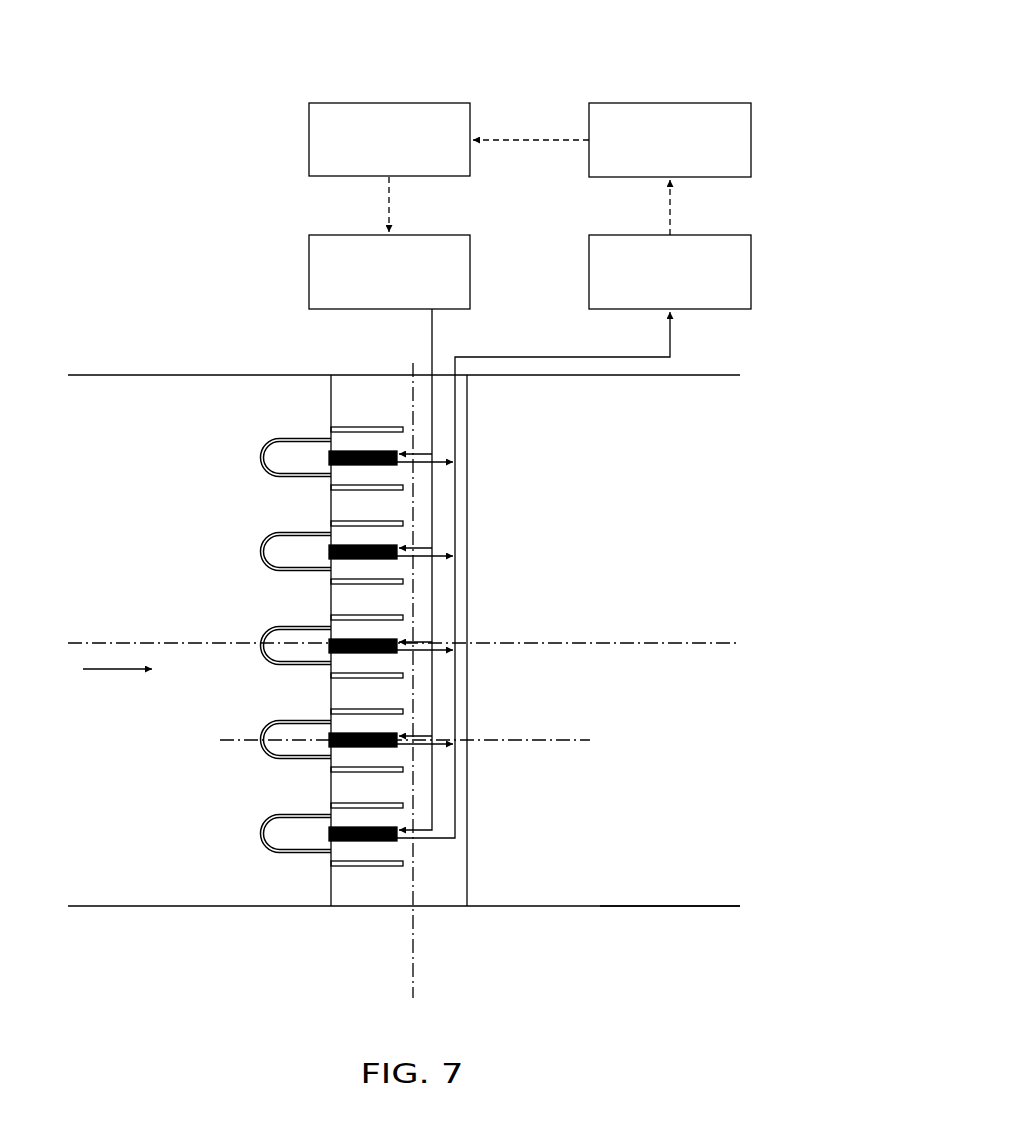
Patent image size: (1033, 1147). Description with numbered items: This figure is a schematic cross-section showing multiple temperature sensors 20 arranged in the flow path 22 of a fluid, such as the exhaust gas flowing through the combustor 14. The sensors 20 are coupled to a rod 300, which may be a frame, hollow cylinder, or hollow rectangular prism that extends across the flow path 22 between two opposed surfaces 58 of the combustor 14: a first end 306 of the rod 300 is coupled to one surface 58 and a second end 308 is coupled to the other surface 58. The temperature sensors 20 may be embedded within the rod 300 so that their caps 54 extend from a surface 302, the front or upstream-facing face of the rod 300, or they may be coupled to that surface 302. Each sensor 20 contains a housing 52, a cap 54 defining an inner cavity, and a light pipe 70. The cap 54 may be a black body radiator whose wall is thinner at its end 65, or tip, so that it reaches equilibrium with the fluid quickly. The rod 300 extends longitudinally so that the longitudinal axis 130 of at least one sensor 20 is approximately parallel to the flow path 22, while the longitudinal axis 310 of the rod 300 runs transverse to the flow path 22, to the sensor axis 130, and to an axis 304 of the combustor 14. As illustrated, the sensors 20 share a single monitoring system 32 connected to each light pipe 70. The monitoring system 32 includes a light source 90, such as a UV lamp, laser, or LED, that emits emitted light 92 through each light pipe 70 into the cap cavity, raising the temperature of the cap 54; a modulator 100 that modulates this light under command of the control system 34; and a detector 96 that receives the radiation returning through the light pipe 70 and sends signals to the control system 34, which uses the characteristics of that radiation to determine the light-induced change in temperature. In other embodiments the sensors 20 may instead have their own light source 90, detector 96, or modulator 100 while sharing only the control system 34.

The combustor 14 is at (734, 930).
The temperature sensor 20 is at (267, 680).
The flow path 22 is at (117, 670).
The monitoring system 32 is at (752, 40).
The control system 34 is at (751, 139).
The housing 52 is at (350, 427).
The cap 54 is at (300, 437).
The surface 58 is at (660, 377).
The end 65 is at (248, 826).
The light pipe 70 is at (367, 446).
The light source 90 is at (309, 272).
The emitted light 92 is at (430, 348).
The detector 96 is at (751, 272).
The modulator 100 is at (309, 140).
The longitudinal axis 130 is at (548, 740).
The rod 300 is at (368, 884).
The surface 302 is at (327, 880).
The axis 304 is at (693, 642).
The first end 306 is at (342, 371).
The second end 308 is at (470, 913).
The longitudinal axis 310 is at (413, 968).